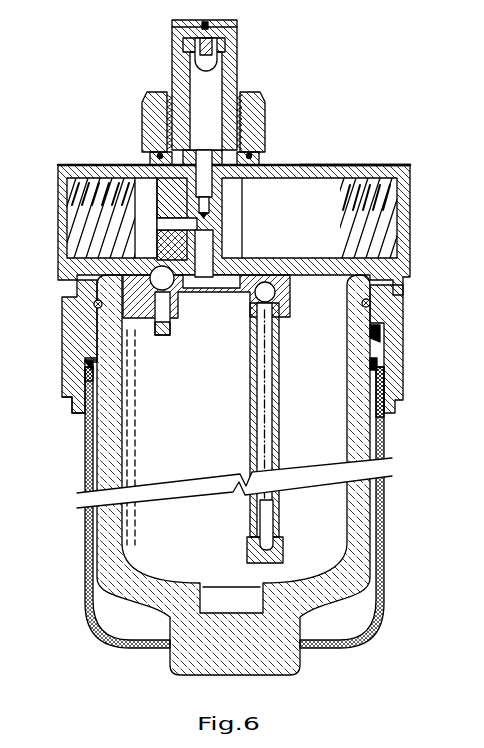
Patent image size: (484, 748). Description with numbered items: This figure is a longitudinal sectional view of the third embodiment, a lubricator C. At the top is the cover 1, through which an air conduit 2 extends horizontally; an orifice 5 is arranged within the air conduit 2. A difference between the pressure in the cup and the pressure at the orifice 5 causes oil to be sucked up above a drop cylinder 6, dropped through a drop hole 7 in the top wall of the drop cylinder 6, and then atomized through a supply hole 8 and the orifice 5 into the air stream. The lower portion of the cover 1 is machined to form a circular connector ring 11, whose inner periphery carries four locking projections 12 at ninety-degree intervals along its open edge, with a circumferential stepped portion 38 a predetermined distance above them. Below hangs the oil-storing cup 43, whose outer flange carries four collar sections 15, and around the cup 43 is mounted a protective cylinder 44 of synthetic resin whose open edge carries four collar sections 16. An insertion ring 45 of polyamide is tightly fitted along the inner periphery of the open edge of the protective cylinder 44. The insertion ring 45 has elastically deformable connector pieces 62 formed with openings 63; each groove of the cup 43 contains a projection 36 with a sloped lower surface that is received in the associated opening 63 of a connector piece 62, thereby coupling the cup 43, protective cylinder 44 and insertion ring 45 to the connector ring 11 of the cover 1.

The cover 1 is at (353, 165).
The air conduit 2 is at (320, 176).
The orifice 5 is at (228, 219).
The drop cylinder 6 is at (218, 68).
The drop hole 7 is at (238, 50).
The supply hole 8 is at (247, 172).
The connector ring 11 is at (63, 337).
The locking projections 12 is at (80, 403).
The collar sections 15 is at (78, 355).
The collar sections 16 is at (87, 379).
The stepped portion 38 is at (95, 303).
The projection 36 is at (380, 347).
The connector pieces 62 is at (380, 331).
The openings 63 is at (380, 358).
The insertion ring 45 is at (380, 408).
The cup 43 is at (367, 488).
The protective cylinder 44 is at (384, 518).
The lubricator C is at (388, 82).